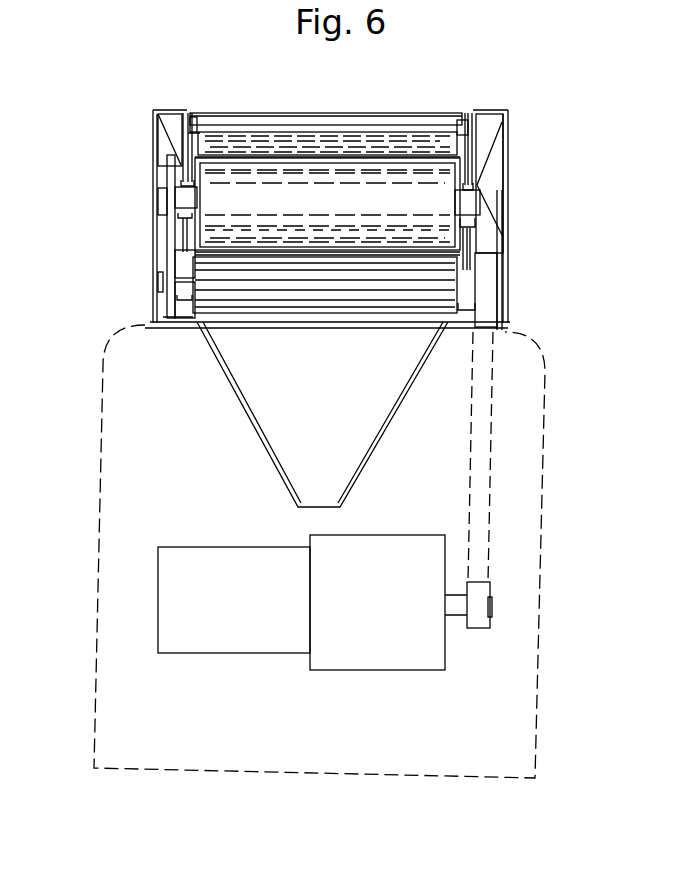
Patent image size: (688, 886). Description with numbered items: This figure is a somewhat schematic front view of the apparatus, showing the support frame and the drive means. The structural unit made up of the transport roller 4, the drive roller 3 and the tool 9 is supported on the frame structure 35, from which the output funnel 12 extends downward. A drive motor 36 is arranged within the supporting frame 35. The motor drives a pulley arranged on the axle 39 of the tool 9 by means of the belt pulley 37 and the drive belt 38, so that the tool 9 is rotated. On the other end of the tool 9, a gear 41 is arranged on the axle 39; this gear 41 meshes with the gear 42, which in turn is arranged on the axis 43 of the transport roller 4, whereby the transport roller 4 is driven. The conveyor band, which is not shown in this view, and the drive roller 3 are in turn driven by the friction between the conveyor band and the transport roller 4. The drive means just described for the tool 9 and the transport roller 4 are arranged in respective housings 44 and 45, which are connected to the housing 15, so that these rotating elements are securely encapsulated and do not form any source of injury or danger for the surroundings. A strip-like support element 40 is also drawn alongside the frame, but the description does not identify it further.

The drive roller 3 is at (400, 145).
The transport roller 4 is at (440, 228).
The tool 9 is at (440, 305).
The output funnel 12 is at (258, 403).
The housing 15 is at (278, 115).
The frame structure 35 is at (523, 397).
The drive motor 36 is at (432, 657).
The belt pulley 37 is at (478, 620).
The drive belt 38 is at (483, 460).
The axle 39 is at (182, 287).
The support strip 40 is at (487, 297).
The gear 41 is at (176, 260).
The gear 42 is at (172, 172).
The axis 43 is at (183, 203).
The housing 44 is at (158, 134).
The housing 45 is at (508, 145).